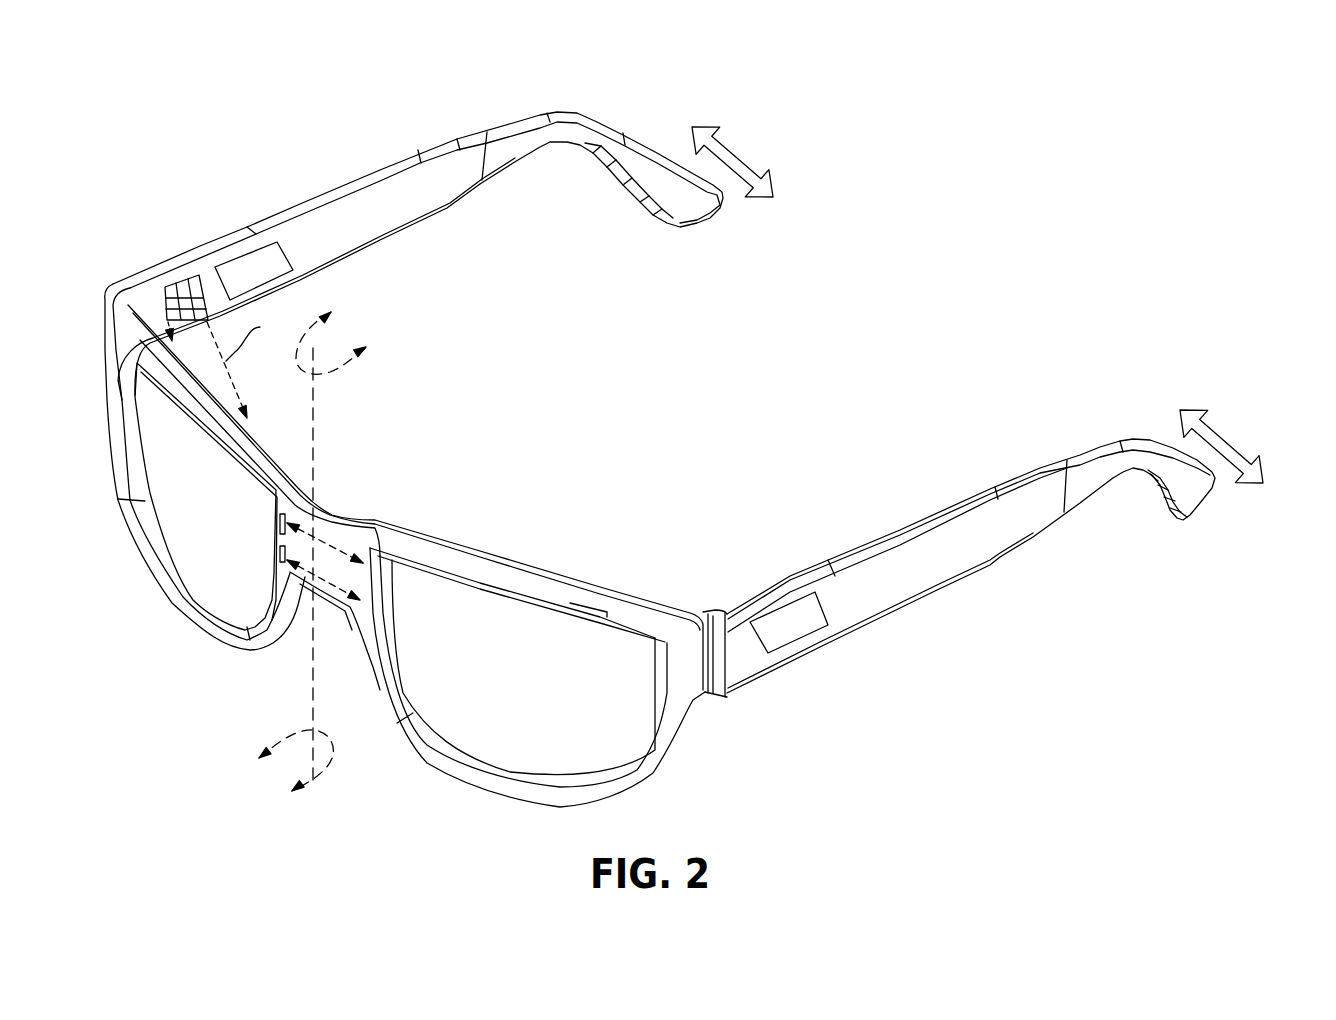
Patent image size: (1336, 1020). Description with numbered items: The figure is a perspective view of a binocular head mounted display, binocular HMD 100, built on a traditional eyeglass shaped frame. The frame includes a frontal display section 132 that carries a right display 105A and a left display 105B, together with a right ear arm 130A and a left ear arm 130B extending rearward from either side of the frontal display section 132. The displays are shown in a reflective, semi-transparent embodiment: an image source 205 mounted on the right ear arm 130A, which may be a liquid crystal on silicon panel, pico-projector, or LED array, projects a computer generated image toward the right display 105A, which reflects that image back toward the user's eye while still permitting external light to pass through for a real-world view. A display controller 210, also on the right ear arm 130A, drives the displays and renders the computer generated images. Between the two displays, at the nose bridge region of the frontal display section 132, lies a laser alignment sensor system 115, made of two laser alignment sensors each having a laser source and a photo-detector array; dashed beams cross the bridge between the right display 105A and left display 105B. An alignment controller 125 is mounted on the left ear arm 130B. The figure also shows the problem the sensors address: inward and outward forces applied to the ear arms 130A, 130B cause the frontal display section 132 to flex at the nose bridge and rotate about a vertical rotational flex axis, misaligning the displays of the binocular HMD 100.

The binocular HMD 100 is at (1120, 140).
The right display 105A is at (206, 501).
The left display 105B is at (537, 677).
The laser alignment sensor system 115 is at (330, 541).
The alignment controller 125 is at (790, 623).
The right ear arm 130A is at (343, 183).
The left ear arm 130B is at (937, 522).
The frontal display section 132 is at (486, 499).
The image source 205 is at (183, 287).
The display controller 210 is at (254, 271).